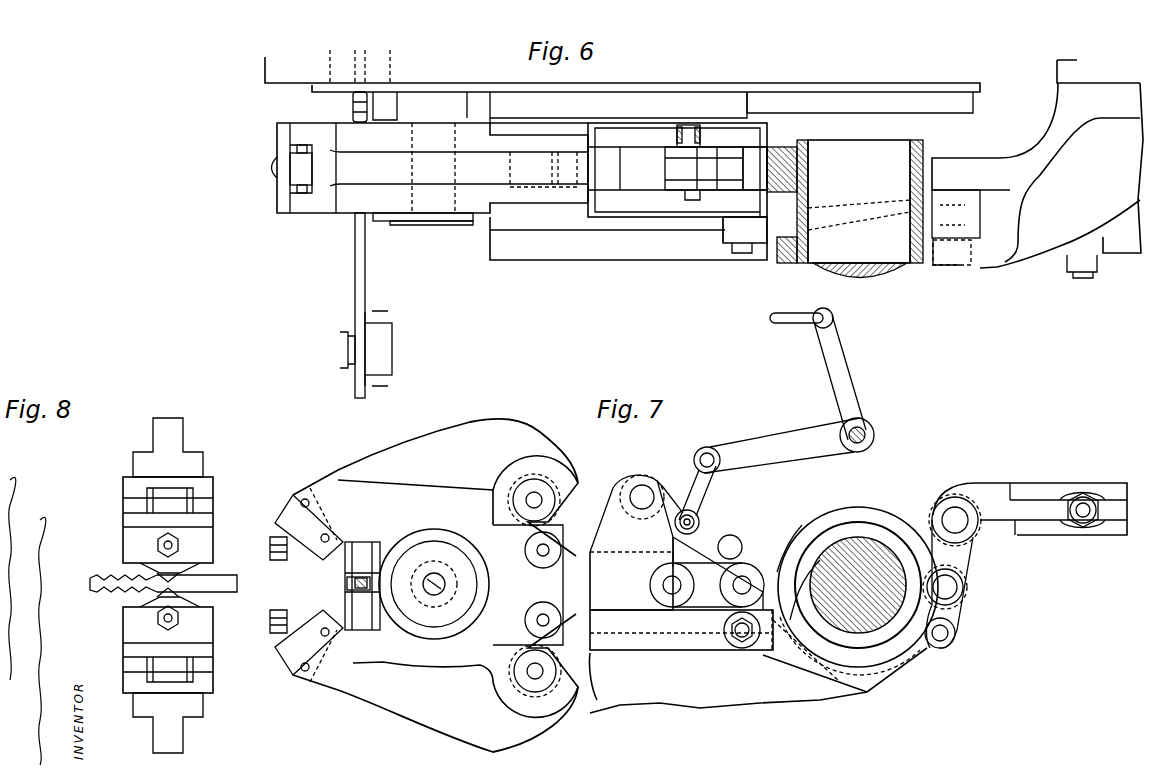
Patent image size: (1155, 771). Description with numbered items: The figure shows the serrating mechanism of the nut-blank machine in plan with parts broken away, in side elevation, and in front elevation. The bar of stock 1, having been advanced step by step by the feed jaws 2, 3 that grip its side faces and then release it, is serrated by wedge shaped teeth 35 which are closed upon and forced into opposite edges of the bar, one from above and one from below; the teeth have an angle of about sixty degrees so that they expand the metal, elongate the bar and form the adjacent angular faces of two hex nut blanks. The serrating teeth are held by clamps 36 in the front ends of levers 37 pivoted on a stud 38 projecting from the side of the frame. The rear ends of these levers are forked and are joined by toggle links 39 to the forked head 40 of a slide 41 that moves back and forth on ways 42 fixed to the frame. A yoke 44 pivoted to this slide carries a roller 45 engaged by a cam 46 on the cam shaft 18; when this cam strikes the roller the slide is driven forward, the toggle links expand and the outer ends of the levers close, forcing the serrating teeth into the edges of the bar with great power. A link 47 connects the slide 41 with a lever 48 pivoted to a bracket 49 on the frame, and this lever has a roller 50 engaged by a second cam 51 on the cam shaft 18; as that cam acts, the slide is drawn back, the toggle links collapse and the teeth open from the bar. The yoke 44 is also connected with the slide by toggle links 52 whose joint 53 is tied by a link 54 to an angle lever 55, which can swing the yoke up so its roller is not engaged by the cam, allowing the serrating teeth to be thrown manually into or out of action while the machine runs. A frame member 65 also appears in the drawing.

In FIG. 6, the bar of stock 1 is at (355, 285).
In FIG. 7, the bar of stock 1 is at (345, 584).
In FIG. 8, the bar of stock 1 is at (243, 572).
In FIG. 6, the feed jaw 2 is at (340, 351).
In FIG. 6, the feed jaw 3 is at (372, 351).
In FIG. 6, the cam shaft 18 is at (875, 268).
In FIG. 7, the cam shaft 18 is at (862, 555).
In FIG. 7, the wedge shaped teeth 35 is at (367, 590).
In FIG. 8, the wedge shaped teeth 35 is at (166, 570).
In FIG. 6, the clamps 36 is at (274, 192).
In FIG. 7, the clamps 36 is at (337, 545).
In FIG. 8, the clamps 36 is at (190, 553).
In FIG. 6, the levers 37 is at (432, 168).
In FIG. 7, the levers 37 is at (435, 585).
In FIG. 8, the levers 37 is at (203, 487).
In FIG. 6, the stud 38 is at (416, 215).
In FIG. 7, the stud 38 is at (438, 568).
In FIG. 6, the toggle links 39 is at (527, 178).
In FIG. 7, the toggle links 39 is at (558, 520).
In FIG. 7, the forked head 40 is at (528, 585).
In FIG. 6, the slide 41 is at (623, 202).
In FIG. 7, the slide 41 is at (631, 549).
In FIG. 6, the ways 42 is at (777, 128).
In FIG. 7, the ways 42 is at (650, 634).
In FIG. 6, the yoke 44 is at (717, 130).
In FIG. 7, the yoke 44 is at (707, 585).
In FIG. 6, the roller 45 is at (770, 163).
In FIG. 7, the roller 45 is at (766, 586).
In FIG. 6, the cam 46 is at (770, 175).
In FIG. 7, the cam 46 is at (797, 563).
In FIG. 6, the link 47 is at (773, 232).
In FIG. 7, the link 47 is at (772, 655).
In FIG. 6, the lever 48 is at (910, 227).
In FIG. 7, the lever 48 is at (957, 610).
In FIG. 6, the bracket 49 is at (1037, 169).
In FIG. 7, the bracket 49 is at (1027, 495).
In FIG. 6, the roller 50 is at (977, 262).
In FIG. 7, the roller 50 is at (967, 587).
In FIG. 6, the cam 51 is at (924, 265).
In FIG. 7, the cam 51 is at (900, 522).
In FIG. 6, the toggle links 52 is at (678, 187).
In FIG. 7, the toggle links 52 is at (703, 530).
In FIG. 6, the joint 53 is at (680, 122).
In FIG. 7, the joint 53 is at (672, 500).
In FIG. 6, the link 54 is at (672, 137).
In FIG. 7, the link 54 is at (717, 483).
In FIG. 7, the angle lever 55 is at (790, 442).
In FIG. 6, the frame 65 is at (714, 84).